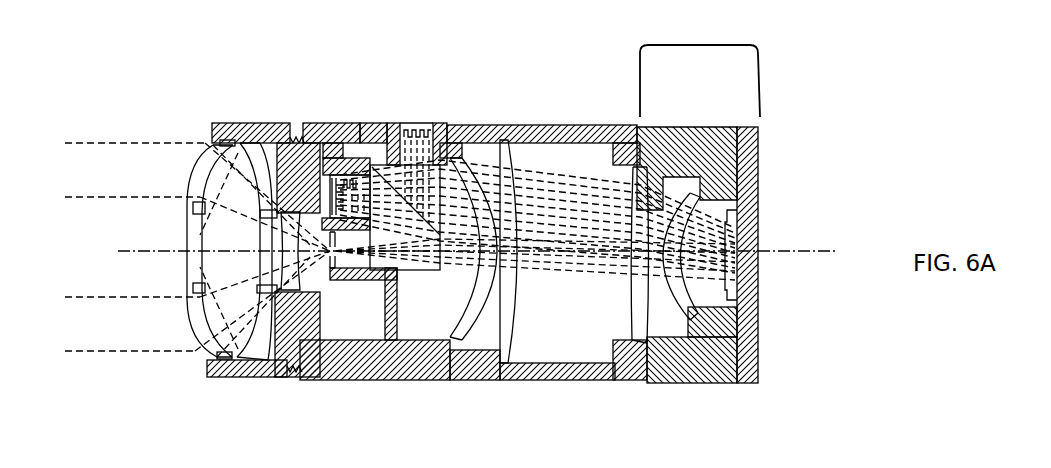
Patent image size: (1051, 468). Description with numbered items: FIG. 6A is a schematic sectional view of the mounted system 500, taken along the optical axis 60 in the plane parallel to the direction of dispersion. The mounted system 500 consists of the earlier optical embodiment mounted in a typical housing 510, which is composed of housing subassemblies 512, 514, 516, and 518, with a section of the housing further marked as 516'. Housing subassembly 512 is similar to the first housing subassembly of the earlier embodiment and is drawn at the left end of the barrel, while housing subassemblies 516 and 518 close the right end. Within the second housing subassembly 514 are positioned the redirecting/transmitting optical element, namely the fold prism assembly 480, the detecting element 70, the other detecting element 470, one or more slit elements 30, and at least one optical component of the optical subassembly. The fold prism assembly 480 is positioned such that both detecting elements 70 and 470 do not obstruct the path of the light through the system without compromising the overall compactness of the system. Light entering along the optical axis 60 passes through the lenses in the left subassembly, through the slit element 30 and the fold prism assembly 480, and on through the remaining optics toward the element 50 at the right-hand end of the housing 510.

The mounted system 500 is at (174, 103).
The housing 510 is at (767, 383).
The first housing subassembly 512 is at (243, 124).
The second housing subassembly 514 is at (502, 125).
The housing subassembly 516 is at (687, 198).
The rear housing section 516' is at (732, 71).
The housing subassembly 518 is at (760, 210).
The optical axis 60 is at (150, 251).
The slit element 30 is at (332, 268).
The detecting element 470 is at (341, 160).
The detecting element 70 is at (416, 123).
The fold prism assembly 480 is at (425, 273).
The detector 50 is at (733, 278).